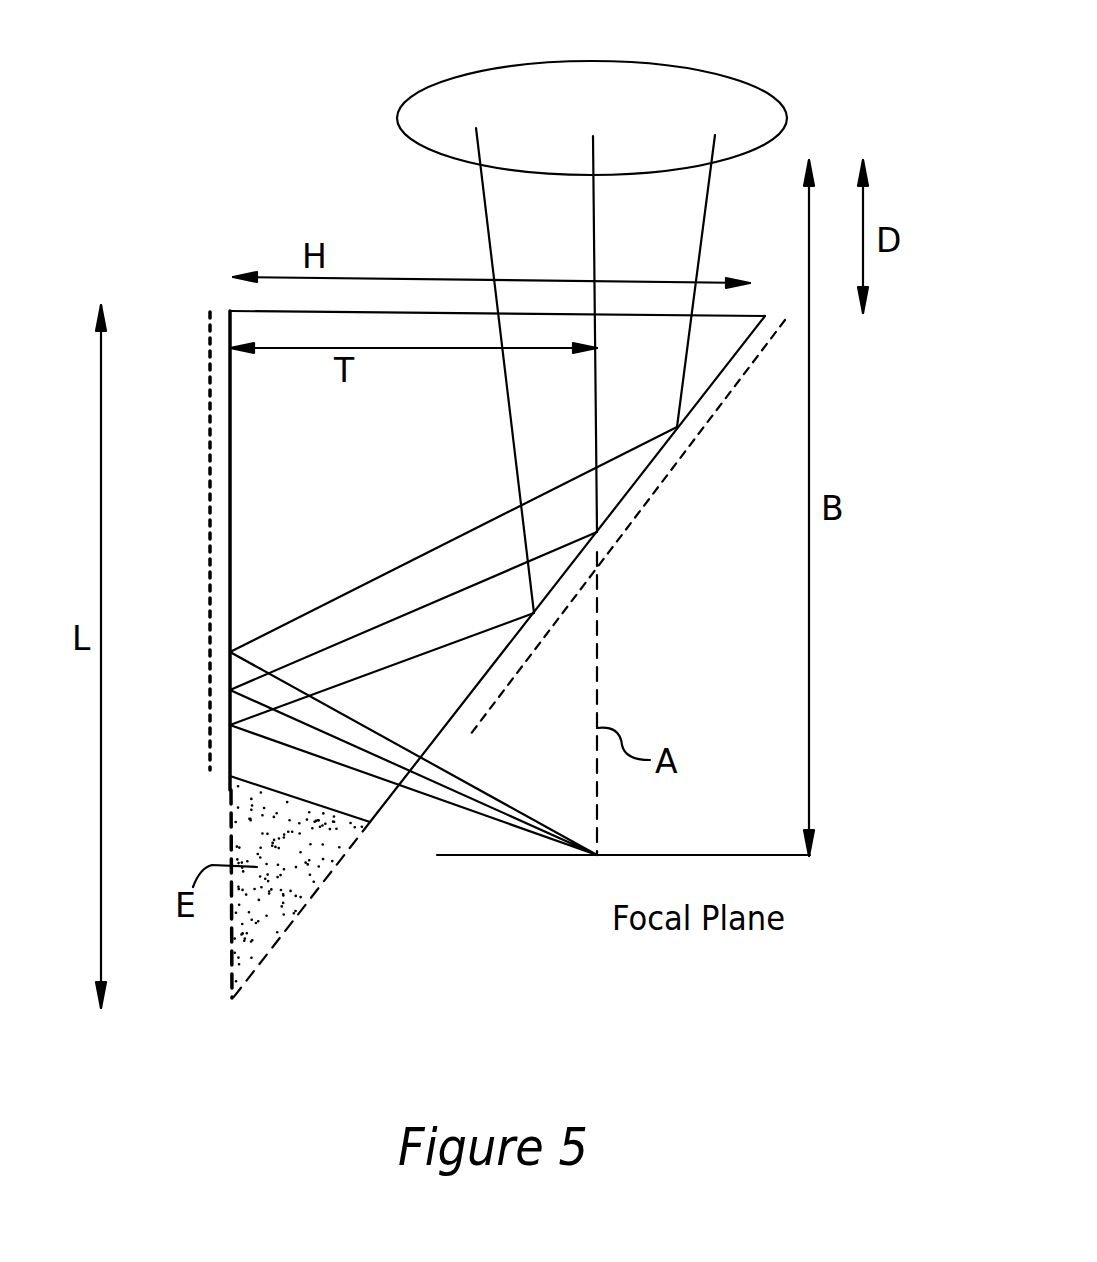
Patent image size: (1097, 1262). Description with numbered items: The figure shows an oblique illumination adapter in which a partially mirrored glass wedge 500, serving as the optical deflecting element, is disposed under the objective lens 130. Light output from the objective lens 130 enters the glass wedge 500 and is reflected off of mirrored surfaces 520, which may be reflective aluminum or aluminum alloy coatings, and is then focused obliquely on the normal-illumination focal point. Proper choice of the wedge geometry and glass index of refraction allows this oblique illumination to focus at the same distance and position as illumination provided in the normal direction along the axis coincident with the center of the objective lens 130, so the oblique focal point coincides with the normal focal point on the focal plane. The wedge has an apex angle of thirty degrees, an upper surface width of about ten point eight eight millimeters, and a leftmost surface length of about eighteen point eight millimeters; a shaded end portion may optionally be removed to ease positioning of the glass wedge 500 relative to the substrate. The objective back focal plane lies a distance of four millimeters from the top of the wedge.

The objective lens 130 is at (705, 95).
The partially mirrored glass wedge 500 is at (298, 470).
The mirrored surfaces 520 is at (613, 547).